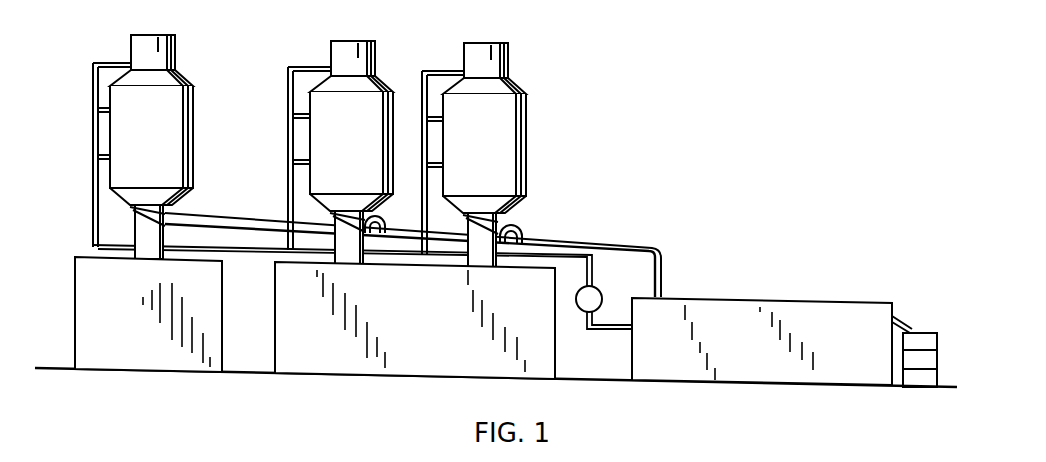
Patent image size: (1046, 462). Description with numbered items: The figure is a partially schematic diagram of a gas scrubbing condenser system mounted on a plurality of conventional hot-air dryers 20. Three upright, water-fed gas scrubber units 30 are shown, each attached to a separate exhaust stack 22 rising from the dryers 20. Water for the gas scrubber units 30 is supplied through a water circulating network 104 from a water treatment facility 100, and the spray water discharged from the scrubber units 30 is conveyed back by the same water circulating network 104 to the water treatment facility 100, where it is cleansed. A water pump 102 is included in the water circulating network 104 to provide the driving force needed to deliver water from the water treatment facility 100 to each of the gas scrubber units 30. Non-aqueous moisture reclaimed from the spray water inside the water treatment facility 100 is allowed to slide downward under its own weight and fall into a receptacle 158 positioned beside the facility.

The hot-air dryer 20 is at (149, 335).
The exhaust stack 22 is at (136, 236).
The gas scrubber unit 30 is at (159, 148).
The water treatment facility 100 is at (736, 350).
The water pump 102 is at (602, 298).
The water circulating network 104 is at (244, 260).
The receptacle 158 is at (937, 355).